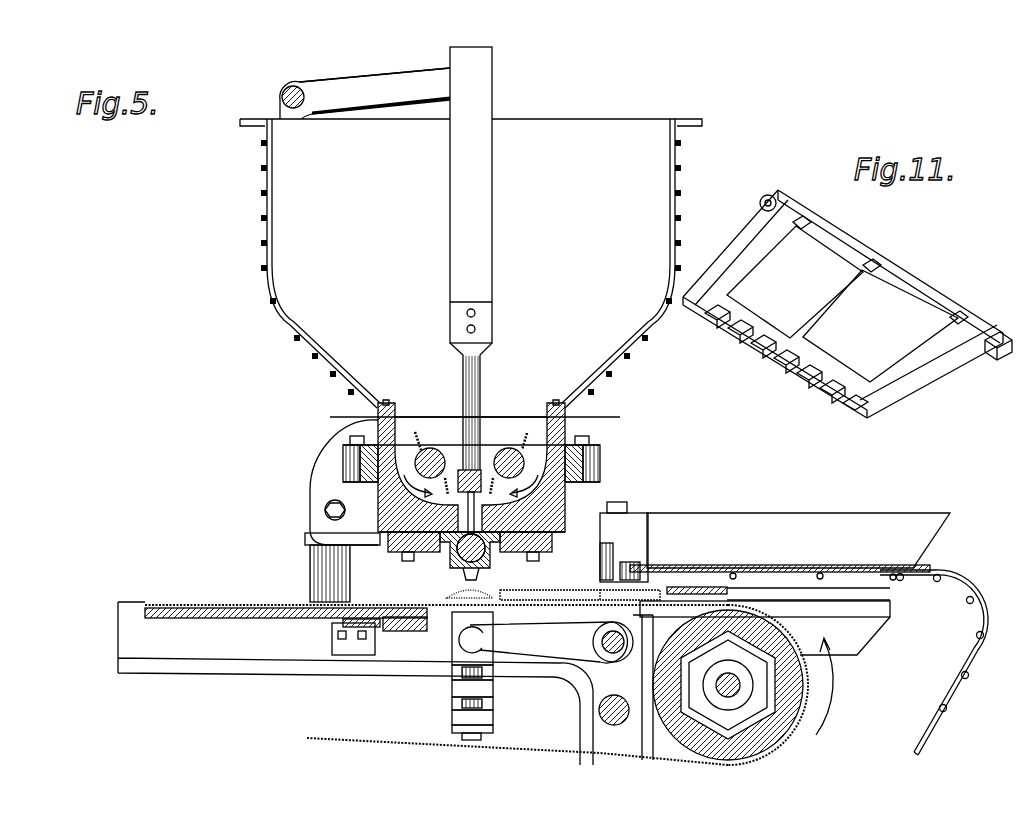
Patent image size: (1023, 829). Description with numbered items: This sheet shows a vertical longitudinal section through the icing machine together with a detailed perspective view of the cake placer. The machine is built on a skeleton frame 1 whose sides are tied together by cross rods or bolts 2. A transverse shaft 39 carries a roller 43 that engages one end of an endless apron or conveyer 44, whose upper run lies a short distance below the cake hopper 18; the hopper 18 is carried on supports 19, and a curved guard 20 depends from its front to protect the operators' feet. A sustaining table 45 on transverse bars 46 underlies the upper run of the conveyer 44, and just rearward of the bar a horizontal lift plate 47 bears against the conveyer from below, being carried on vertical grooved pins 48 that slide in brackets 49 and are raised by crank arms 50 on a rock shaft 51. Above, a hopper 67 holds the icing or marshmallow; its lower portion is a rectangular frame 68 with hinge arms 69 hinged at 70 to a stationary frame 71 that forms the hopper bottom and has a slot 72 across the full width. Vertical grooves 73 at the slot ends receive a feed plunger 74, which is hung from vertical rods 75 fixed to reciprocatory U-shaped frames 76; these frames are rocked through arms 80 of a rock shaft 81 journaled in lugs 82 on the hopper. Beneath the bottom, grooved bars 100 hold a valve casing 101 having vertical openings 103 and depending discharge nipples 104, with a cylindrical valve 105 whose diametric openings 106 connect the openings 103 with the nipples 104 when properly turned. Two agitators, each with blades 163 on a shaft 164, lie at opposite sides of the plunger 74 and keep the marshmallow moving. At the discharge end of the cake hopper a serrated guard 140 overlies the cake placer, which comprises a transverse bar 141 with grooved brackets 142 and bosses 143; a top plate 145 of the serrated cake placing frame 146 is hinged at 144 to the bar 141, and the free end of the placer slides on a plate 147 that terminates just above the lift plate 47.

In FIG. 5, the skeleton frame 1 is at (118, 662).
In FIG. 5, the cross rods or bolts 2 is at (598, 712).
In FIG. 5, the hopper 18 is at (920, 530).
In FIG. 5, the supports 19 is at (918, 748).
In FIG. 5, the curved guard 20 is at (965, 682).
In FIG. 5, the transverse shaft 39 is at (742, 684).
In FIG. 5, the roller 43 is at (800, 686).
In FIG. 5, the endless apron or conveyer 44 is at (145, 604).
In FIG. 5, the sustaining table 45 is at (145, 617).
In FIG. 5, the transverse bars 46 is at (355, 650).
In FIG. 5, the lift plate 47 is at (392, 702).
In FIG. 5, the vertical grooved pins 48 is at (442, 702).
In FIG. 5, the brackets 49 is at (462, 716).
In FIG. 5, the crank arms 50 is at (543, 642).
In FIG. 5, the rock shaft 51 is at (614, 662).
In FIG. 5, the hopper 67 is at (471, 263).
In FIG. 5, the rectangular frame 68 is at (395, 430).
In FIG. 5, the hinge arms 69 is at (322, 485).
In FIG. 5, the hinge 70 is at (322, 514).
In FIG. 5, the stationary frame 71 is at (305, 540).
In FIG. 5, the slot 72 is at (545, 520).
In FIG. 5, the vertical grooves 73 is at (433, 448).
In FIG. 5, the feed plunger 74 is at (508, 448).
In FIG. 5, the vertical rods 75 is at (480, 372).
In FIG. 5, the reciprocatory U-shaped frames 76 is at (494, 84).
In FIG. 5, the arms 80 is at (372, 78).
In FIG. 5, the rock shaft 81 is at (291, 86).
In FIG. 5, the lugs 82 is at (280, 90).
In FIG. 5, the grooved bars 100 is at (415, 542).
In FIG. 5, the valve casing 101 is at (345, 562).
In FIG. 5, the vertical openings 103 is at (378, 467).
In FIG. 5, the discharge nipples 104 is at (462, 550).
In FIG. 5, the cylindrical valve 105 is at (385, 605).
In FIG. 5, the diametric openings 106 is at (640, 515).
In FIG. 5, the serrated guard 140 is at (768, 541).
In FIG. 5, the transverse bar 141 is at (868, 595).
In FIG. 11, the transverse bar 141 is at (850, 245).
In FIG. 11, the grooved brackets 142 is at (1000, 362).
In FIG. 11, the bosses 143 is at (769, 195).
In FIG. 5, the hinge 144 is at (848, 541).
In FIG. 11, the hinge 144 is at (953, 332).
In FIG. 5, the top plate 145 is at (655, 585).
In FIG. 11, the top plate 145 is at (885, 307).
In FIG. 5, the serrated cake placing frame 146 is at (582, 584).
In FIG. 11, the serrated cake placing frame 146 is at (742, 347).
In FIG. 5, the plate 147 is at (940, 607).
In FIG. 5, the blades 163 is at (302, 386).
In FIG. 5, the shaft 164 is at (400, 360).